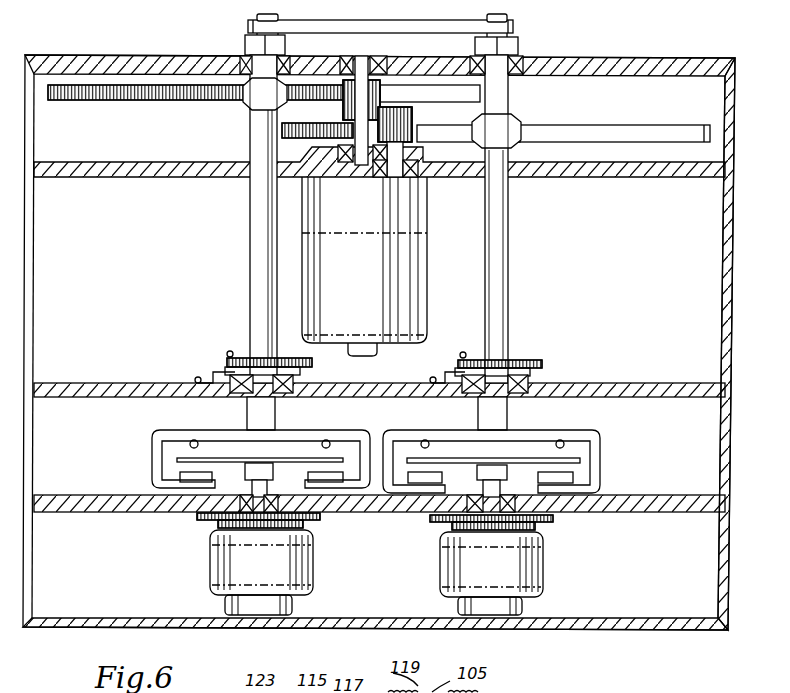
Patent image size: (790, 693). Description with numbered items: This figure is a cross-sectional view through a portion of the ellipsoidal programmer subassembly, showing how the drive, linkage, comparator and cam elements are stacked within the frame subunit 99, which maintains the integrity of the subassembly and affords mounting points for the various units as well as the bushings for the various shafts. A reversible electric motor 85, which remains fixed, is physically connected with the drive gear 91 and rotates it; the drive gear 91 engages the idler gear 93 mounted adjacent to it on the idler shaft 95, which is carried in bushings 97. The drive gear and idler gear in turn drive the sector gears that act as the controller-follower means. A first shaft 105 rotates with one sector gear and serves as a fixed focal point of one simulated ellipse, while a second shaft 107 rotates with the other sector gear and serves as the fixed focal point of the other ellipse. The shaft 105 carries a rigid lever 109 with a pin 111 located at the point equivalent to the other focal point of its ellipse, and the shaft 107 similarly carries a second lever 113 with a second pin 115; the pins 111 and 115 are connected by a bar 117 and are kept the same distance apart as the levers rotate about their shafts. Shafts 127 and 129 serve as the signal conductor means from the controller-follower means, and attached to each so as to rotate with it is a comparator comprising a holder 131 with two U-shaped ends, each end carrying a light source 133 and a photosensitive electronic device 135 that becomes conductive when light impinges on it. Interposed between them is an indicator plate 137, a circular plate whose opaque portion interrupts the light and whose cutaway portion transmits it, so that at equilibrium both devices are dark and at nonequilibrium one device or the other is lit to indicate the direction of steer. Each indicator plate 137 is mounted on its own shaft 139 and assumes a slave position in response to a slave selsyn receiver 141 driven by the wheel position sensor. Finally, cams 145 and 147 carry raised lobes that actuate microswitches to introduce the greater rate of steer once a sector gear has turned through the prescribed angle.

The reversible electric motor 85 is at (414, 271).
The drive gear 91 is at (412, 114).
The idler gear 93 is at (343, 108).
The idler shaft 95 is at (360, 57).
The bushings 97 is at (348, 57).
The frame subunit 99 is at (628, 50).
The first shaft 105 is at (497, 97).
The second shaft 107 is at (246, 57).
The lever 109 is at (519, 52).
The pin 111 is at (500, 17).
The second lever 113 is at (247, 42).
The second pin 115 is at (256, 16).
The bar 117 is at (410, 33).
The shaft 127 is at (500, 268).
The shaft 129 is at (253, 267).
The holder 131 is at (527, 437).
The light source 133 is at (565, 447).
The electronic device 135 is at (572, 479).
The indicator plate 137 is at (580, 462).
The shaft 139 is at (480, 487).
The slave selsyn receiver 141 is at (522, 575).
The cam 145 is at (312, 364).
The cam 147 is at (520, 362).